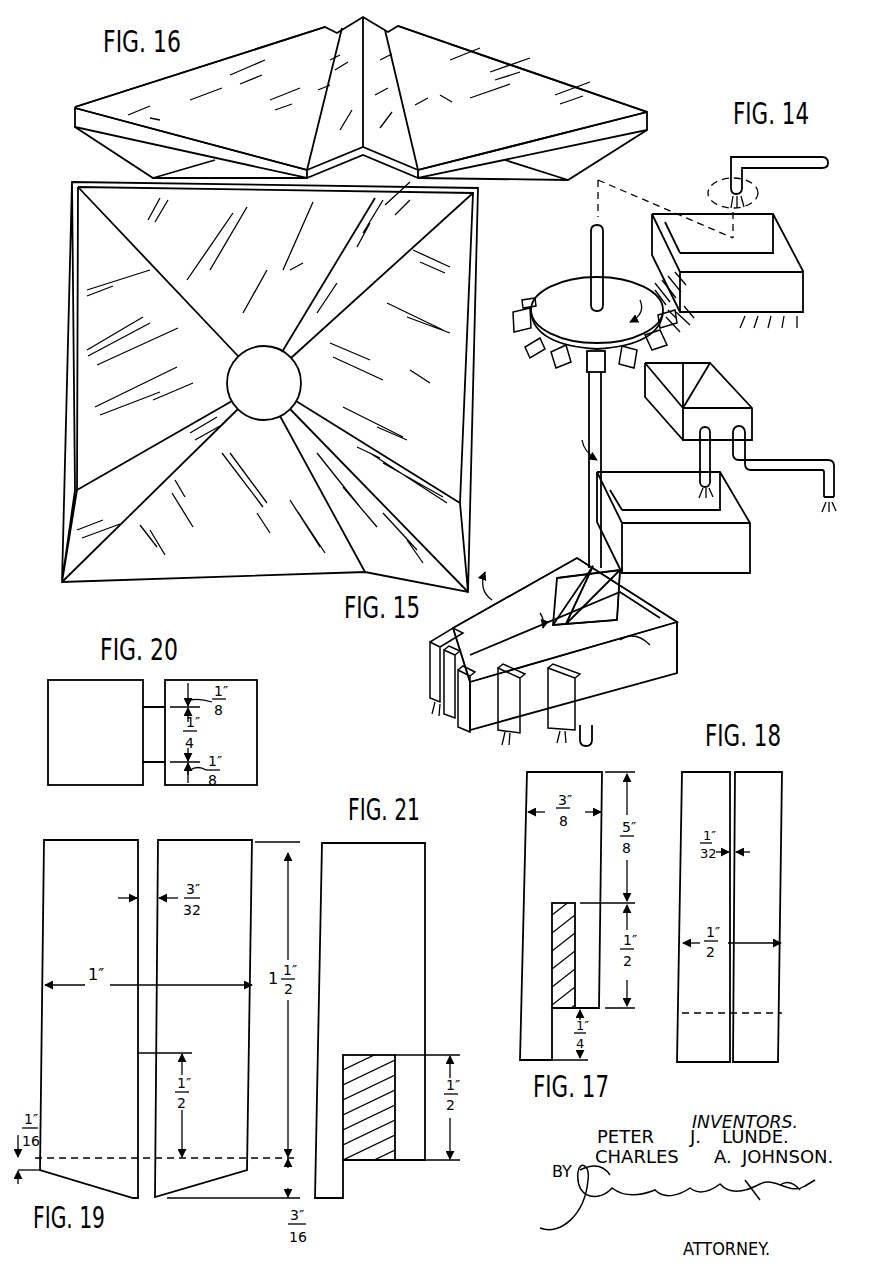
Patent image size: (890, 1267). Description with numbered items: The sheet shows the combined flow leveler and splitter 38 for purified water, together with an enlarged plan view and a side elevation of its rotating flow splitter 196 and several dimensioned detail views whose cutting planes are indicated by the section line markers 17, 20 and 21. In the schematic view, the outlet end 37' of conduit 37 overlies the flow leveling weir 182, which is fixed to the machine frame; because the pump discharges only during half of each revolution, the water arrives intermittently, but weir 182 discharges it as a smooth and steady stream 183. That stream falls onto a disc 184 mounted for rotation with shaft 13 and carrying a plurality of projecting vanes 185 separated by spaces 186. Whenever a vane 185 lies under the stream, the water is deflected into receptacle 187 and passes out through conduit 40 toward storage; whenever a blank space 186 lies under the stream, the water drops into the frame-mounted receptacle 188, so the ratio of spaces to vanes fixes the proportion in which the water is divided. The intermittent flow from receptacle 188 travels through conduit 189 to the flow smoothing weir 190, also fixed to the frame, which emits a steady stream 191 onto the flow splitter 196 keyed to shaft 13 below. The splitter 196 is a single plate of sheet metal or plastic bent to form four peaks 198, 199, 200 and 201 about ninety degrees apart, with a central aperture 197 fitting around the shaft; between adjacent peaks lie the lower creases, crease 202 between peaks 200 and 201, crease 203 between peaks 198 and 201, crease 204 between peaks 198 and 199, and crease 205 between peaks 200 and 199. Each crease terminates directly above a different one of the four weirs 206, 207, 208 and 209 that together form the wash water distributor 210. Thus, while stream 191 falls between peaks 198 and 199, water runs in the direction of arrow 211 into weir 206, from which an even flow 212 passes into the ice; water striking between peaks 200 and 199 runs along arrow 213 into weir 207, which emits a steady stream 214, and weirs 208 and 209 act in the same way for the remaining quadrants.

In FIG. 14, the shaft 13 is at (594, 460).
In FIG. 14, the conduit 37 is at (779, 169).
In FIG. 14, the outlet end 37' is at (750, 193).
In FIG. 14, the flow leveler and splitter 38 is at (806, 238).
In FIG. 14, the conduit 40 is at (796, 463).
In FIG. 14, the flow leveling weir 182 is at (790, 300).
In FIG. 14, the stream 183 is at (665, 297).
In FIG. 14, the disc 184 is at (582, 321).
In FIG. 14, the vanes 185 is at (533, 345).
In FIG. 14, the spaces 186 is at (552, 360).
In FIG. 14, the receptacle 187 is at (726, 395).
In FIG. 14, the receptacle 188 is at (612, 315).
In FIG. 14, the conduit 189 is at (700, 458).
In FIG. 14, the flow smoothing weir 190 is at (708, 561).
In FIG. 14, the stream 191 is at (604, 553).
In FIG. 16, the flow splitter 196 is at (606, 110).
In FIG. 15, the flow splitter 196 is at (466, 496).
In FIG. 15, the central aperture 197 is at (268, 347).
In FIG. 15, the peak 198 is at (206, 326).
In FIG. 14, the peak 198 is at (624, 580).
In FIG. 16, the peak 199 is at (562, 96).
In FIG. 15, the peak 199 is at (398, 258).
In FIG. 14, the peak 199 is at (648, 596).
In FIG. 16, the peak 200 is at (360, 104).
In FIG. 15, the peak 200 is at (298, 437).
In FIG. 14, the peak 200 is at (553, 585).
In FIG. 16, the peak 201 is at (148, 96).
In FIG. 15, the peak 201 is at (196, 457).
In FIG. 14, the peak 201 is at (562, 558).
In FIG. 16, the lower crease 202 is at (320, 124).
In FIG. 15, the lower crease 202 is at (314, 468).
In FIG. 16, the lower crease 203 is at (183, 153).
In FIG. 15, the lower crease 203 is at (137, 452).
In FIG. 16, the lower crease 204 is at (538, 163).
In FIG. 15, the lower crease 204 is at (328, 285).
In FIG. 16, the lower crease 205 is at (408, 136).
In FIG. 15, the lower crease 205 is at (328, 418).
In FIG. 14, the weir 206 is at (535, 662).
In FIG. 14, the weir 207 is at (447, 667).
In FIG. 14, the weir 208 is at (630, 640).
In FIG. 14, the weir 209 is at (450, 640).
In FIG. 14, the wash water distributor 210 is at (680, 657).
In FIG. 14, the arrow 211 is at (565, 637).
In FIG. 14, the even flow 212 is at (507, 732).
In FIG. 14, the arrow 213 is at (543, 618).
In FIG. 14, the steady stream 214 is at (452, 736).
In FIG. 18, the section line 17- 17 is at (735, 752).
In FIG. 19, the section line 20- 20 is at (73, 825).
In FIG. 19, the section line 21- 21 is at (150, 807).